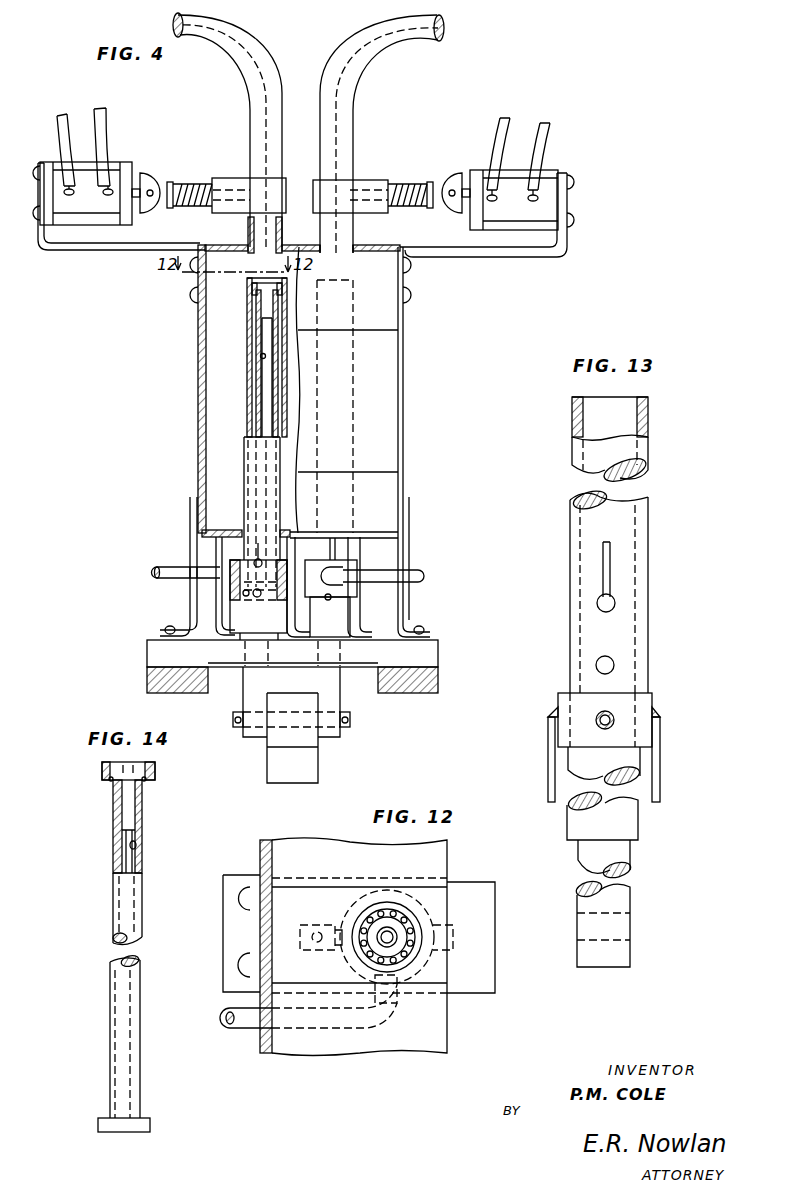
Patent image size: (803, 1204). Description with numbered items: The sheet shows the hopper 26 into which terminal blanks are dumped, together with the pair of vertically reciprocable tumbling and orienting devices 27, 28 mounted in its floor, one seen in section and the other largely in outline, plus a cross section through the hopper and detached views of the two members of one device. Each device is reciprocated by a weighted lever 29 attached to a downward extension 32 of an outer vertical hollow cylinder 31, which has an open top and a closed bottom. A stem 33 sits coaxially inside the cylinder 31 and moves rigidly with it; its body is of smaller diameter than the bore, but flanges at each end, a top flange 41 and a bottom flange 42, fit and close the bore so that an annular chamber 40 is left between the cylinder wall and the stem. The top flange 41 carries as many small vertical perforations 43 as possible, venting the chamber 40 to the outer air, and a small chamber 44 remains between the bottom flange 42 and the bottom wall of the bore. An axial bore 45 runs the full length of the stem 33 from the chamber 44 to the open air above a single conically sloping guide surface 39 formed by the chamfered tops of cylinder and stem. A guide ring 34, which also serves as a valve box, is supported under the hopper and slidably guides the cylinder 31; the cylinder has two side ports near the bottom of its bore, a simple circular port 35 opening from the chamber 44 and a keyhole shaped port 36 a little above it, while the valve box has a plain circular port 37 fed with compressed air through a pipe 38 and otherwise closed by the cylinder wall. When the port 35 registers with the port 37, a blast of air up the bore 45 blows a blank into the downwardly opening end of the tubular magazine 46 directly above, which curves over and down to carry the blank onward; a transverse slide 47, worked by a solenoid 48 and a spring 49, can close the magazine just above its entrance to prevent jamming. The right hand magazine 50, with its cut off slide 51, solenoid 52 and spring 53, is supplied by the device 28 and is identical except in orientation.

In FIG. 4, the hopper 26 is at (198, 334).
In FIG. 12, the hopper 26 is at (260, 854).
In FIG. 4, the tumbling and orienting device 27 is at (216, 437).
In FIG. 12, the tumbling and orienting device 27 is at (355, 968).
In FIG. 4, the tumbling and orienting device 28 is at (353, 365).
In FIG. 4, the weighted lever 29 is at (312, 765).
In FIG. 4, the outer vertical hollow cylinder 31 is at (247, 336).
In FIG. 13, the outer vertical hollow cylinder 31 is at (648, 533).
In FIG. 12, the outer vertical hollow cylinder 31 is at (415, 952).
In FIG. 4, the downward extension 32 is at (250, 690).
In FIG. 13, the downward extension 32 is at (630, 910).
In FIG. 4, the stem 33 is at (258, 381).
In FIG. 12, the stem 33 is at (398, 932).
In FIG. 14, the stem 33 is at (117, 904).
In FIG. 4, the guide ring 34 is at (238, 566).
In FIG. 13, the guide ring 34 is at (652, 702).
In FIG. 12, the guide ring 34 is at (352, 912).
In FIG. 13, the port 35 is at (612, 668).
In FIG. 13, the port 36 is at (612, 605).
In FIG. 13, the port 37 is at (614, 722).
In FIG. 4, the pipe 38 is at (163, 578).
In FIG. 12, the pipe 38 is at (247, 1022).
In FIG. 4, the guide surface 39 is at (258, 278).
In FIG. 13, the guide surface 39 is at (577, 398).
In FIG. 12, the guide surface 39 is at (378, 915).
In FIG. 14, the guide surface 39 is at (110, 765).
In FIG. 4, the annular chamber 40 is at (246, 409).
In FIG. 14, the top flange 41 is at (155, 775).
In FIG. 14, the bottom flange 42 is at (150, 1128).
In FIG. 12, the perforations 43 is at (388, 915).
In FIG. 14, the perforations 43 is at (111, 782).
In FIG. 4, the small chamber 44 is at (245, 600).
In FIG. 4, the axial bore 45 is at (261, 357).
In FIG. 14, the axial bore 45 is at (136, 847).
In FIG. 4, the tubular magazine 46 is at (258, 57).
In FIG. 4, the transverse slide 47 is at (236, 187).
In FIG. 4, the solenoid 48 is at (113, 175).
In FIG. 4, the spring 49 is at (180, 182).
In FIG. 4, the right hand magazine 50 is at (368, 44).
In FIG. 4, the cut off slide 51 is at (363, 188).
In FIG. 4, the solenoid 52 is at (543, 173).
In FIG. 4, the spring 53 is at (400, 188).